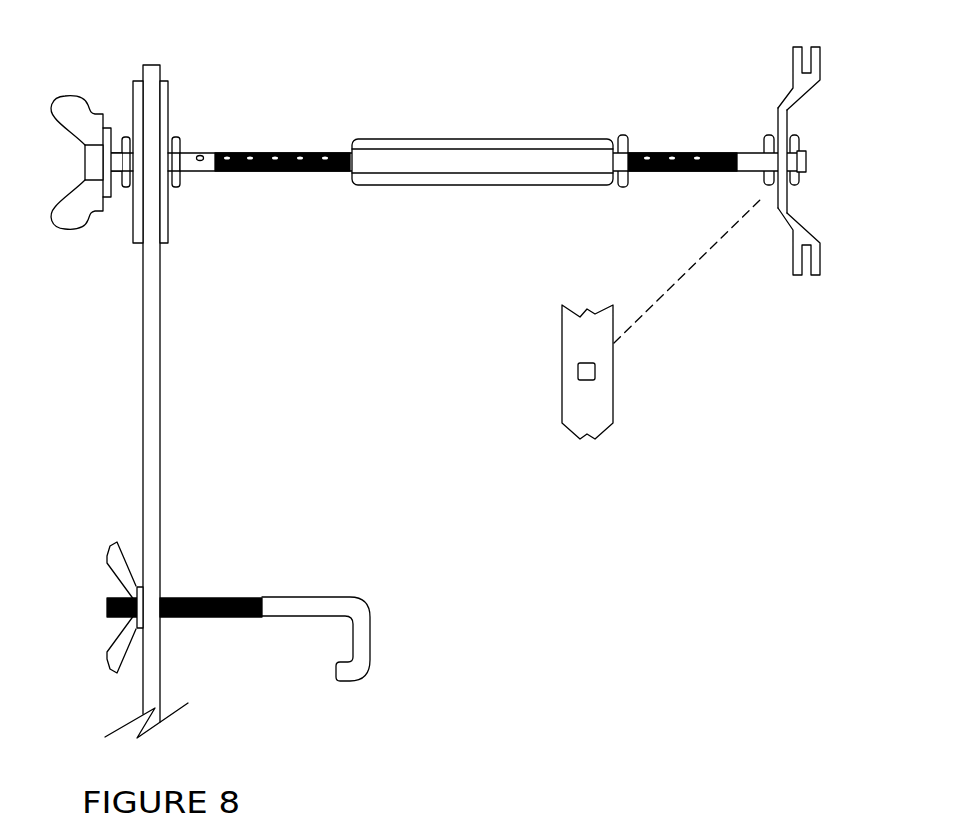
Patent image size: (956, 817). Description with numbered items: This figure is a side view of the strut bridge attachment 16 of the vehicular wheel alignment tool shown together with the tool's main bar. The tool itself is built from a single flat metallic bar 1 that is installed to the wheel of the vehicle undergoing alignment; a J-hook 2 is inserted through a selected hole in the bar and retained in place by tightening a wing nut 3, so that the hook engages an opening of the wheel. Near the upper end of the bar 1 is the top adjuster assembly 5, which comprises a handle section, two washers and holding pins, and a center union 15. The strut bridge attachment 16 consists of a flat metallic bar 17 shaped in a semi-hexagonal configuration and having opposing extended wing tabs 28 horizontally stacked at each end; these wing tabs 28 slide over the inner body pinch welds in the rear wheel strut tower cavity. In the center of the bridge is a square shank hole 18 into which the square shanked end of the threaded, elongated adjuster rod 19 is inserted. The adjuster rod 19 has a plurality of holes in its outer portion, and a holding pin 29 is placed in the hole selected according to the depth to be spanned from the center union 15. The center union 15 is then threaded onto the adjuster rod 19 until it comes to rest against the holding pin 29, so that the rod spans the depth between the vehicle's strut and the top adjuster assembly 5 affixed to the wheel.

The flat metallic bar 1 is at (143, 327).
The J-hook 2 is at (363, 600).
The wing nut 3 is at (110, 542).
The top adjuster assembly 5 is at (110, 105).
The center union 15 is at (522, 140).
The strut bridge attachment 16 is at (493, 151).
The flat metallic bar 17 is at (794, 185).
The square shank hole 18 is at (578, 380).
The adjuster rod 19 is at (693, 172).
The wing tabs 28 is at (803, 58).
The holding pin 29 is at (620, 137).